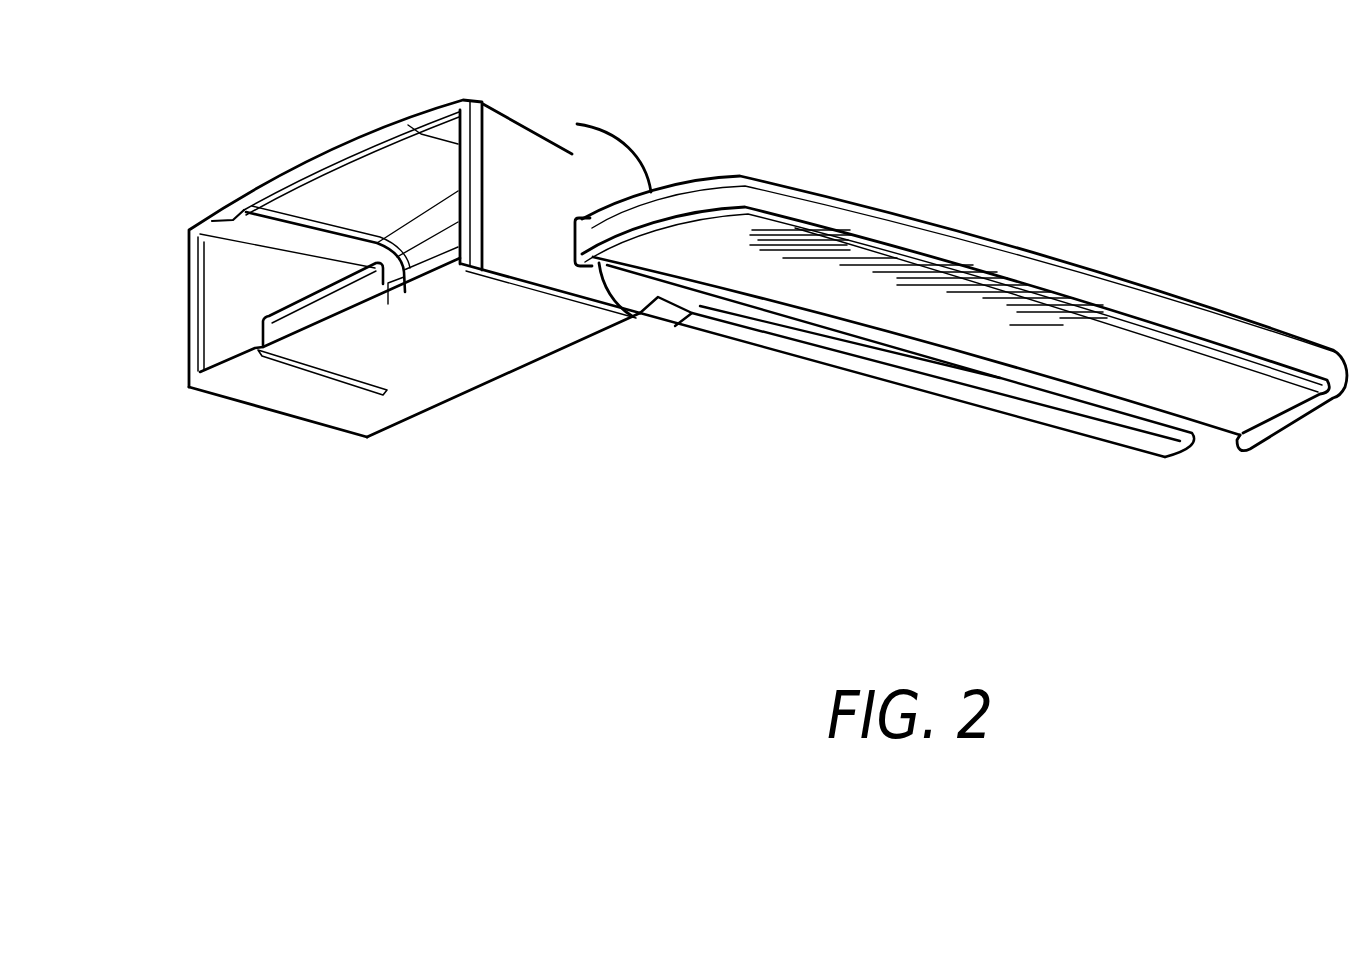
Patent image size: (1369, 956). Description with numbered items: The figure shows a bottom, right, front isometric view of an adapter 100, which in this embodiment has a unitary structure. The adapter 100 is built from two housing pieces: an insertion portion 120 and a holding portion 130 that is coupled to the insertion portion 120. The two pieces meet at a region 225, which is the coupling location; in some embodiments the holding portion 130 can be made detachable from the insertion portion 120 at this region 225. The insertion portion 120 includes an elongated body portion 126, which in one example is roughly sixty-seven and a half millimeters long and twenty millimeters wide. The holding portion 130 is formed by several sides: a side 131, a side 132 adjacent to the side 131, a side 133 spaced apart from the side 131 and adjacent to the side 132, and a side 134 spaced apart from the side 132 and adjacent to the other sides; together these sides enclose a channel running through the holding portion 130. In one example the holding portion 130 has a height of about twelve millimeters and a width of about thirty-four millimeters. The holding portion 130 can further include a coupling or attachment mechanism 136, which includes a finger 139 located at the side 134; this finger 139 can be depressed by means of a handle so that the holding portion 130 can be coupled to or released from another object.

The adapter 100 is at (698, 344).
The insertion portion 120 is at (1152, 357).
The body portion 126 is at (917, 293).
The holding portion 130 is at (277, 395).
The side 131 is at (573, 150).
The side 132 is at (214, 218).
The side 133 is at (240, 288).
The side 134 is at (547, 324).
The attachment mechanism 136 is at (400, 350).
The finger 139 is at (344, 352).
The region 225 is at (620, 312).